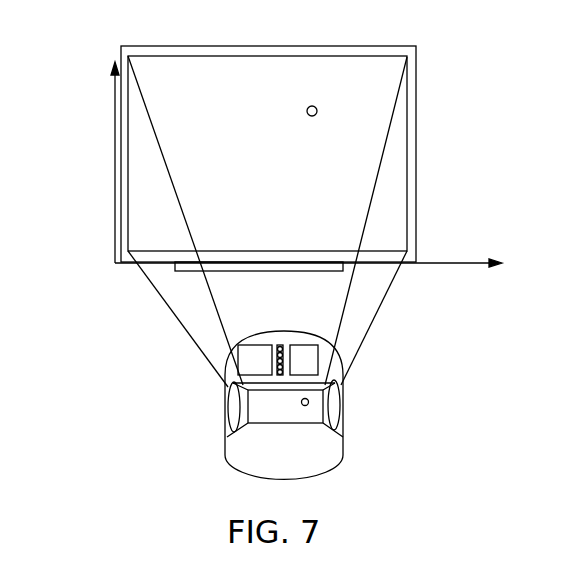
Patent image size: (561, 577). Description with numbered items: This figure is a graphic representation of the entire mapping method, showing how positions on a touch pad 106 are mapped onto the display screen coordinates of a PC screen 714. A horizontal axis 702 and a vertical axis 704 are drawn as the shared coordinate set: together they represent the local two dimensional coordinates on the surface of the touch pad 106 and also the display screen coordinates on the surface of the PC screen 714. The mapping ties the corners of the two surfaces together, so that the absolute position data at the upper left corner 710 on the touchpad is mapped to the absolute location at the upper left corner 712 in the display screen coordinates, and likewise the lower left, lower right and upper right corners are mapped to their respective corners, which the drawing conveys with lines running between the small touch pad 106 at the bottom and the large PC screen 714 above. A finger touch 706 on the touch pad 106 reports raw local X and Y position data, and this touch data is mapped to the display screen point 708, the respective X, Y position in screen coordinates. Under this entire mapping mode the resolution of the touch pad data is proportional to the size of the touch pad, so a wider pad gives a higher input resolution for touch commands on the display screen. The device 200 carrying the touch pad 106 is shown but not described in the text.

The touch pad 106 is at (238, 401).
The robot device 200 is at (229, 477).
The horizontal axis 702 is at (449, 265).
The vertical axis 704 is at (115, 100).
The finger touch 706 is at (308, 402).
The display screen point 708 is at (318, 111).
The upper left corner 710 is at (134, 70).
The upper left corner 712 is at (270, 405).
The PC screen 714 is at (415, 165).